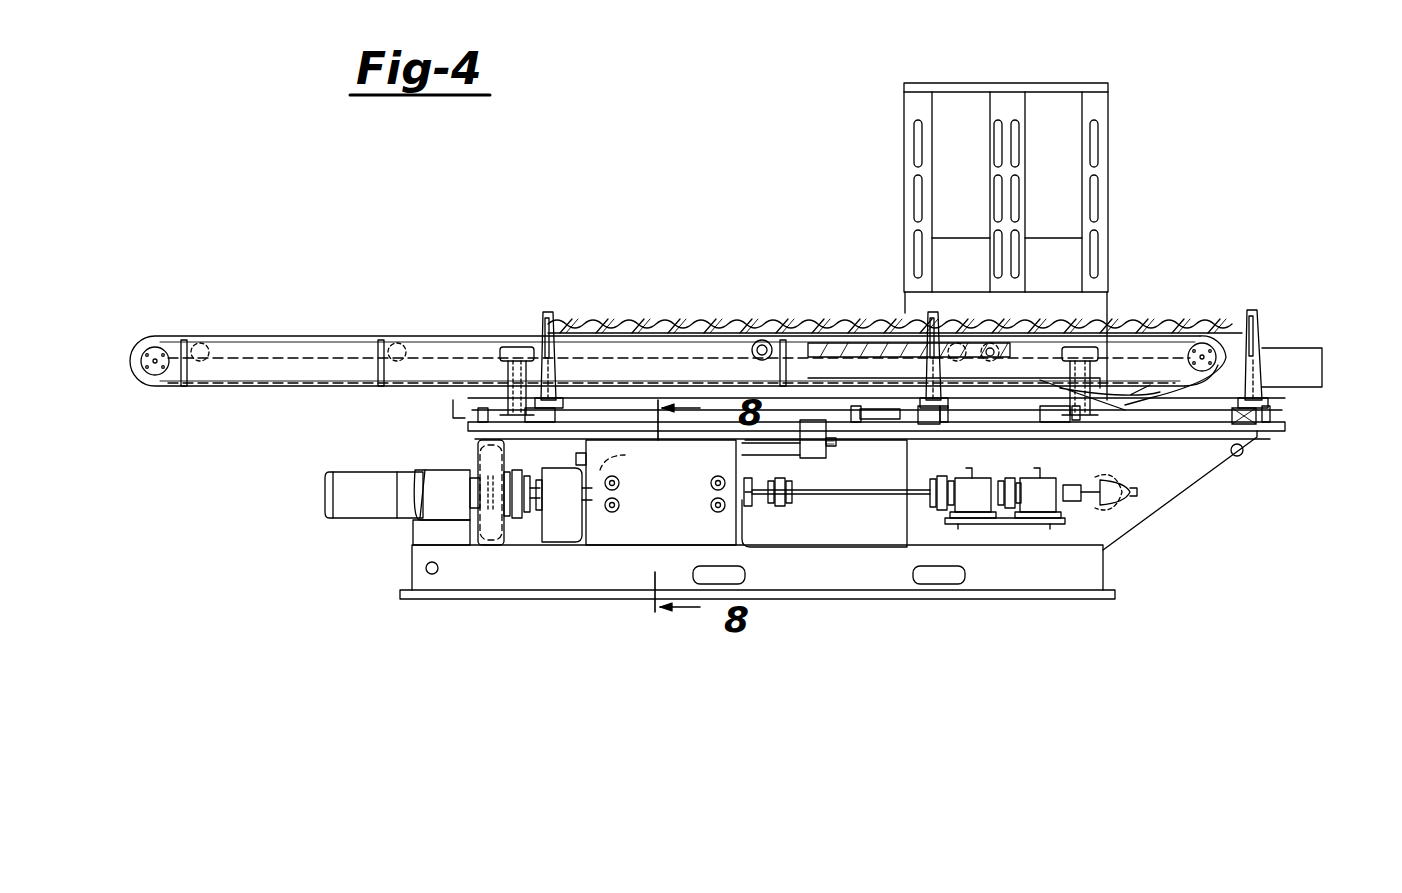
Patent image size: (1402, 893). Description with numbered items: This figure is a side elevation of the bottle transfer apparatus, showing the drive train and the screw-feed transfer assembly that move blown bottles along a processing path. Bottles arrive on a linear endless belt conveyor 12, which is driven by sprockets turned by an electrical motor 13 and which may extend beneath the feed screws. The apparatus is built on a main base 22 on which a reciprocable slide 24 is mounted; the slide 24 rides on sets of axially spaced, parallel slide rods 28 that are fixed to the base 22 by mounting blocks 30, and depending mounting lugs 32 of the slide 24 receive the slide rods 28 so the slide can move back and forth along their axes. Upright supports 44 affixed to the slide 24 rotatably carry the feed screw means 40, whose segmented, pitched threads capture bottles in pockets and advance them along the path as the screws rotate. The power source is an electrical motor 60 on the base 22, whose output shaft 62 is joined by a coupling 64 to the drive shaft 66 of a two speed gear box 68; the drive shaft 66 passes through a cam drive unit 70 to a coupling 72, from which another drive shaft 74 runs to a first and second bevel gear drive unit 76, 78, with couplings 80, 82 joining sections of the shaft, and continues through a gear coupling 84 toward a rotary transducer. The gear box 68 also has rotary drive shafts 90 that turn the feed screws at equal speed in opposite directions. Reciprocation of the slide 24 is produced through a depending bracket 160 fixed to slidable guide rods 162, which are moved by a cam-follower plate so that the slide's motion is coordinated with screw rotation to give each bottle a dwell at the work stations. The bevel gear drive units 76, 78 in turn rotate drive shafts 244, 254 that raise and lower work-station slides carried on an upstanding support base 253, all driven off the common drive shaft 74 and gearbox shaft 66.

The linear endless belt conveyor 12 is at (360, 348).
The electrical motor 13 is at (1322, 360).
The main base 22 is at (782, 585).
The reciprocable slide 24 is at (1196, 405).
The slide rods 28 is at (498, 435).
The mounting blocks 30 is at (465, 414).
The depending mounting lugs 32 is at (540, 425).
The feed screw means 40 is at (638, 320).
The upright supports 44 is at (538, 335).
The electrical motor 60 is at (386, 503).
The output shaft 62 is at (490, 545).
The coupling 64 is at (515, 525).
The drive shaft 66 is at (590, 492).
The two speed gear box 68 is at (560, 545).
The cam drive unit 70 is at (622, 525).
The coupling 72 is at (782, 504).
The drive shaft 74 is at (868, 497).
The first bevel gear drive unit 76 is at (972, 497).
The second bevel gear drive unit 78 is at (1035, 497).
The coupling 80 is at (945, 522).
The coupling 82 is at (1010, 525).
The gear coupling 84 is at (1078, 502).
The rotary drive shafts 90 is at (528, 520).
The depending bracket 160 is at (836, 452).
The slidable guide rods 162 is at (782, 449).
The drive shaft 244 is at (965, 478).
The upstanding support base 253 is at (1068, 108).
The drive shaft 254 is at (1040, 478).